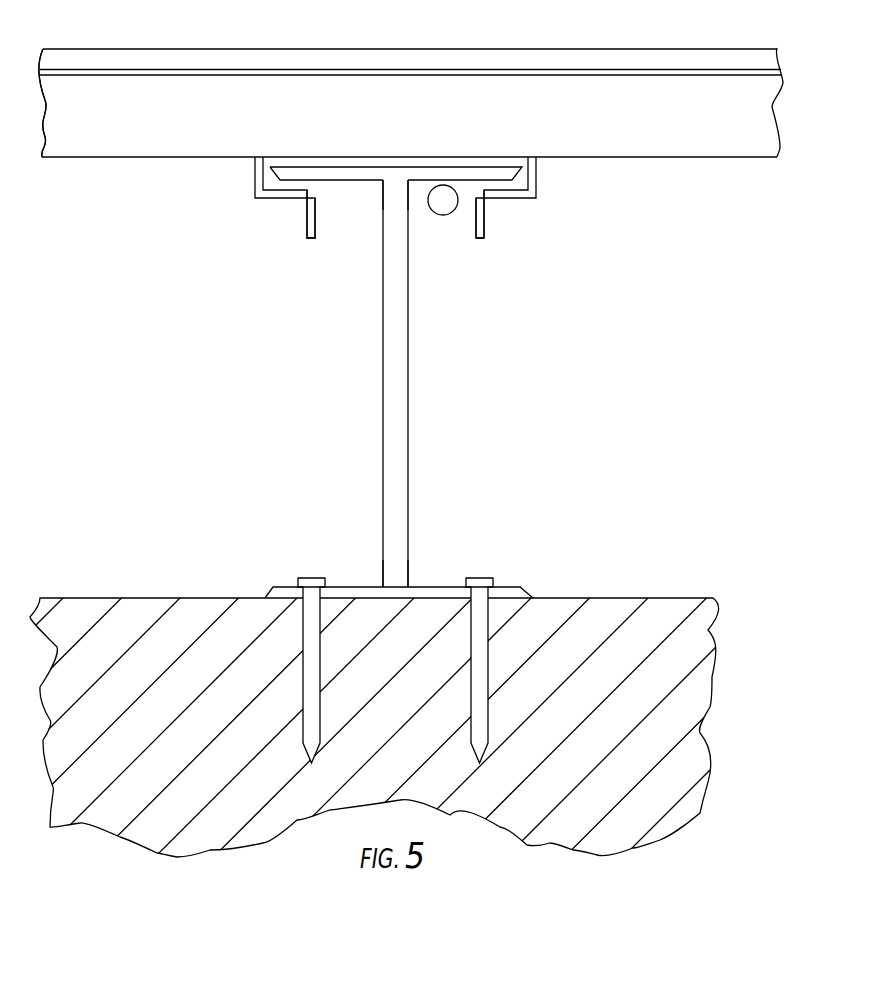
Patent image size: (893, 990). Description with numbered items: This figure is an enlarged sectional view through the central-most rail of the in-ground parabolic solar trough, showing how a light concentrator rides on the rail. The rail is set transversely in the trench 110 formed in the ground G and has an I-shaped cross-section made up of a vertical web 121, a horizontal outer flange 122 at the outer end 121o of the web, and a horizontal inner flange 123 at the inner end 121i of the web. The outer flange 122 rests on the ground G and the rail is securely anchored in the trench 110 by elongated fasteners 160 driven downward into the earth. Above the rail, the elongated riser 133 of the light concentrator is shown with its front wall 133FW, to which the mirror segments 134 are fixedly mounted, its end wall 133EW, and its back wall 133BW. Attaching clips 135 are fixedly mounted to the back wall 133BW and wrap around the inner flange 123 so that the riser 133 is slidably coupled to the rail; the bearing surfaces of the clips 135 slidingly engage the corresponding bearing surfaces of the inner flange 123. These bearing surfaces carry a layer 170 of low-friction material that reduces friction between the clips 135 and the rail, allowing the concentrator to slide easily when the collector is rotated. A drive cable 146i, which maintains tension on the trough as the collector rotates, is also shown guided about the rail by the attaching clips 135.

The trench 110 is at (667, 543).
The vertical web 121 is at (408, 395).
The inner end of the vertical web 121i is at (382, 182).
The outer end of the vertical web 121o is at (378, 585).
The horizontal outer flange 122 is at (415, 585).
The horizontal inner flange 123 is at (328, 167).
The riser 133 is at (411, 118).
The front wall of the riser 133FW is at (612, 84).
The end wall of the riser 133EW is at (666, 148).
The back wall of the riser 133BW is at (685, 160).
The mirror segments 134 is at (545, 48).
The attaching clips 135 is at (531, 197).
The cable 146i is at (435, 214).
The elongated fasteners 160 is at (320, 664).
The layer of low friction material 170 is at (317, 210).
The ground G is at (653, 676).